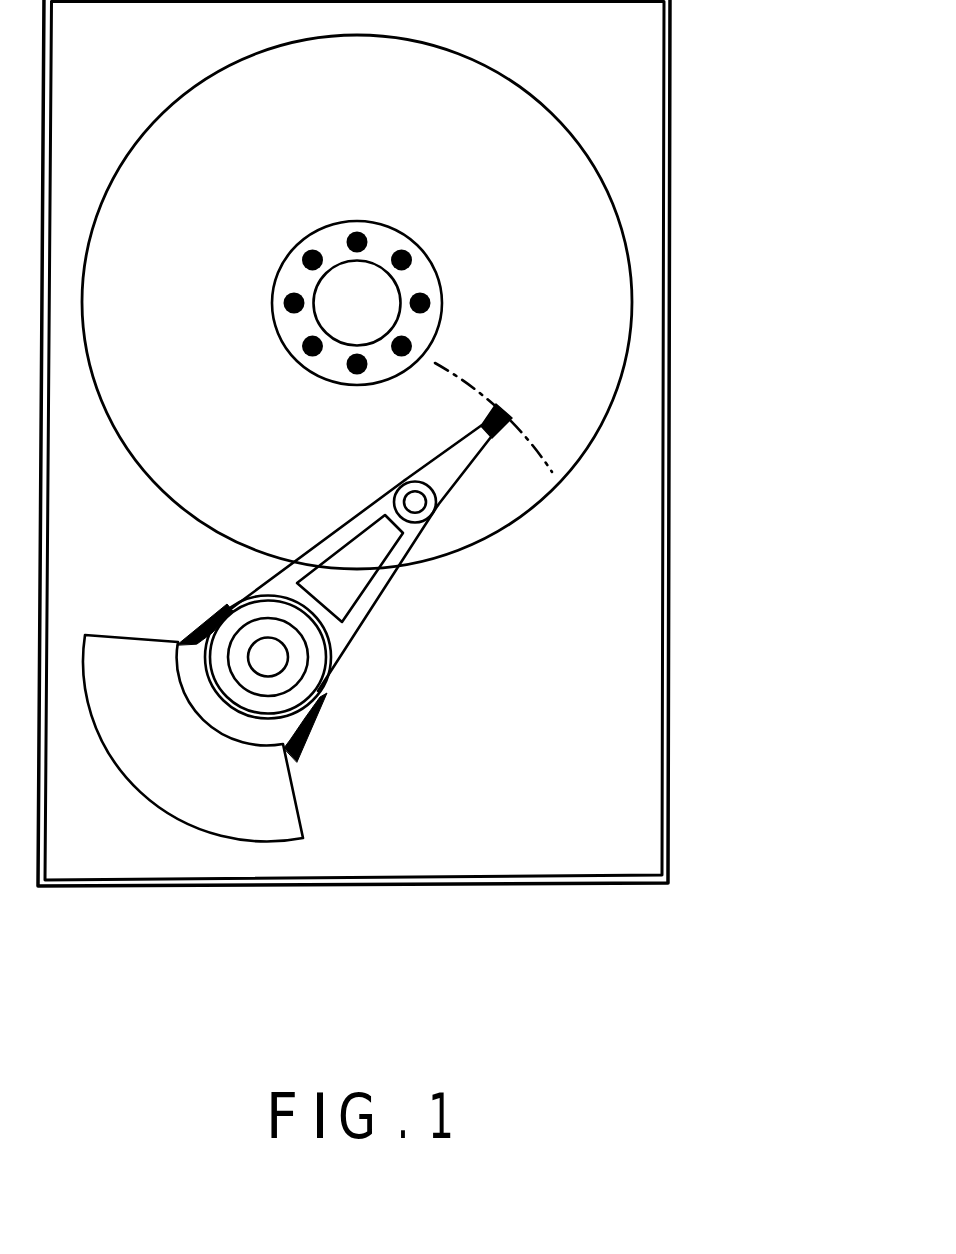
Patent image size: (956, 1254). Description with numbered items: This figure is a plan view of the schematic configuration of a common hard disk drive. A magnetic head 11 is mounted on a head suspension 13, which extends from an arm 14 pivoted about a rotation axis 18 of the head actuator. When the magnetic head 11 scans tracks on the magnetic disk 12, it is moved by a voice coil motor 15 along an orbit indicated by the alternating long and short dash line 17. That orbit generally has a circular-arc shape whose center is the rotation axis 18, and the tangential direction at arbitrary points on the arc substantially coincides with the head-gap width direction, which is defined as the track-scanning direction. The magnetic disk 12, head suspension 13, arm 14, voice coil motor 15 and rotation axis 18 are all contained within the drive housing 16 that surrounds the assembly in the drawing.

The magnetic head 11 is at (505, 403).
The magnetic disk 12 is at (483, 98).
The head suspension 13 is at (452, 465).
The actuator arm 14 is at (377, 593).
The voice coil motor 15 is at (143, 677).
The housing base 16 is at (672, 197).
The alternating long and short dash line 17 is at (455, 372).
The rotation axis 18 is at (268, 657).